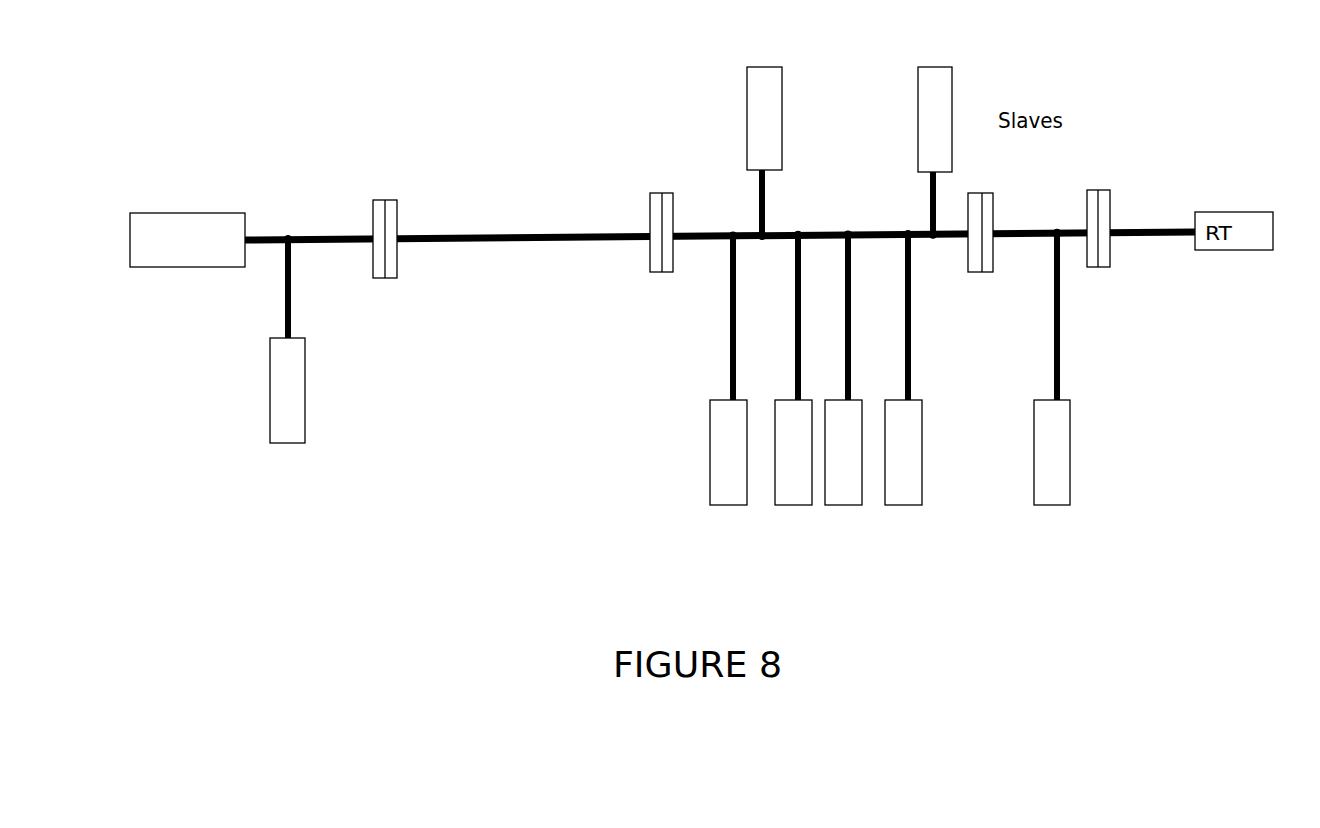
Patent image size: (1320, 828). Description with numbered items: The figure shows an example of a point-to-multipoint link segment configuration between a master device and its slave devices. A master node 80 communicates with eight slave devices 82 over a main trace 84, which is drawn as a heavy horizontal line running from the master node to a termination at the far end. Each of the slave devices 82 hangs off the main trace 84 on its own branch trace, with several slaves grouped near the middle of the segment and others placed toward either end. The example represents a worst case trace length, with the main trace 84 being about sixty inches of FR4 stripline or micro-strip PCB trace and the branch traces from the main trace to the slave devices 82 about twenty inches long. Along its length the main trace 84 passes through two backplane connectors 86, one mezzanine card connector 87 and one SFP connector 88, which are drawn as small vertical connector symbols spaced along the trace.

The master node 80 is at (198, 213).
The slave devices 82 is at (275, 395).
The main trace 84 is at (602, 233).
The backplane connectors 86 is at (387, 203).
The mezzanine card connector 87 is at (983, 197).
The SFP connector 88 is at (1092, 193).